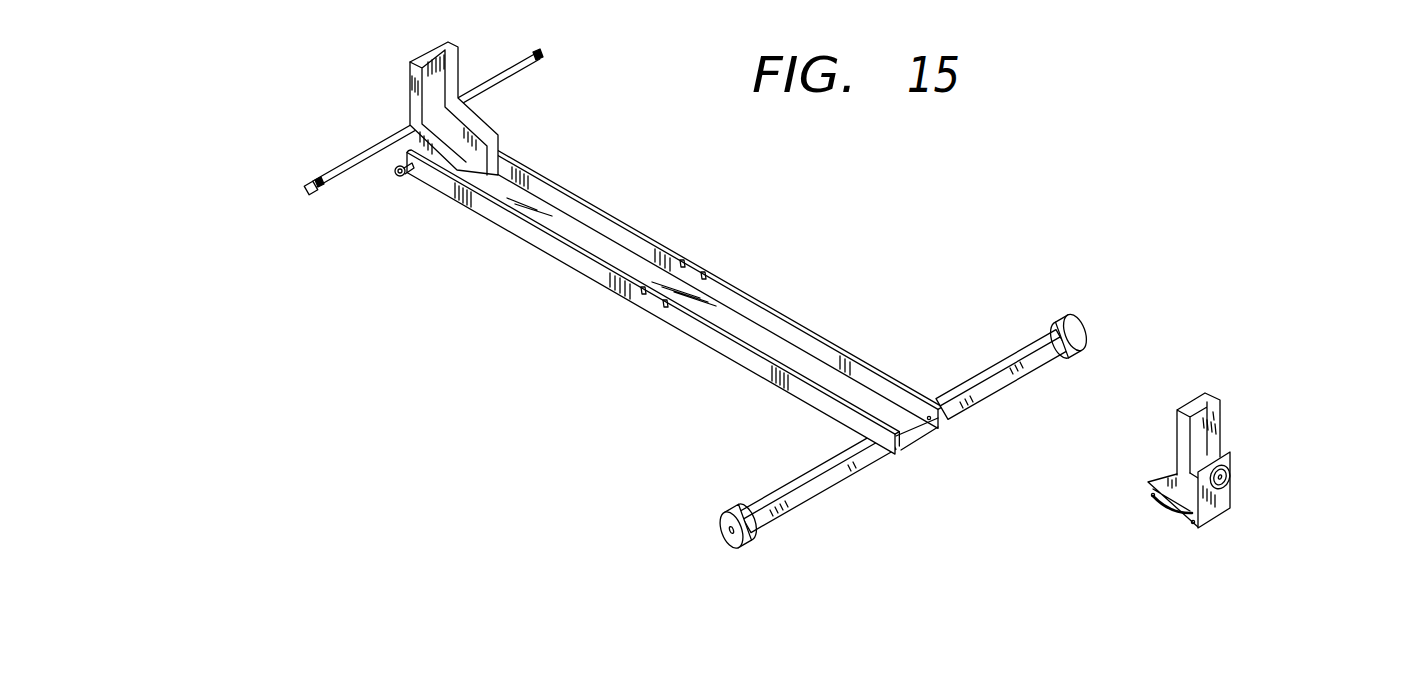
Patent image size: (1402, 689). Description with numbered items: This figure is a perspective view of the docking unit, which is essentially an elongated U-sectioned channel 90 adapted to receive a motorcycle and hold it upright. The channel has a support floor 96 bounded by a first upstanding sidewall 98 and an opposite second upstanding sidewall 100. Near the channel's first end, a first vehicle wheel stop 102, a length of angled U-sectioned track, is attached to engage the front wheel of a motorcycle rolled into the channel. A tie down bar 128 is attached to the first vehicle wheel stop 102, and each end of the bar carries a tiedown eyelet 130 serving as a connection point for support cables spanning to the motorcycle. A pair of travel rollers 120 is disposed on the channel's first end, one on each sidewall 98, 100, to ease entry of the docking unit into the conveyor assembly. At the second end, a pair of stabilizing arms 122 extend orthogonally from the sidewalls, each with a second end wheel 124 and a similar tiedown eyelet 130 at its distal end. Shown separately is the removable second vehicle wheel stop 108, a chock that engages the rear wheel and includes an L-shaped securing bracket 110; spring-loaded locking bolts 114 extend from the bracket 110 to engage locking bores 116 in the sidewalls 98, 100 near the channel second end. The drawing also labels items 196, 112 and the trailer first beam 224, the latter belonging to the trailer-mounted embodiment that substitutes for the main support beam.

The U-sectioned channel 90 is at (540, 287).
The support floor 96 is at (617, 262).
The first upstanding sidewall 98 is at (535, 238).
The second upstanding sidewall 100 is at (553, 198).
The first vehicle wheel stop 102 is at (448, 58).
The second vehicle wheel stop 108 is at (1248, 403).
The securing bracket 110 is at (1232, 462).
The base plate 112 is at (1148, 483).
The spring-loaded locking bolts 114 is at (1203, 531).
The locking bores 116 is at (928, 421).
The travel rollers 120 is at (403, 175).
The stabilizing arms 122 is at (1031, 368).
The second end wheel 124 is at (1072, 330).
The tie down bar 128 is at (520, 72).
The tiedown eyelet 130 is at (543, 56).
The retaining clip 196 is at (706, 274).
The trailer first beam 224 is at (285, 0).